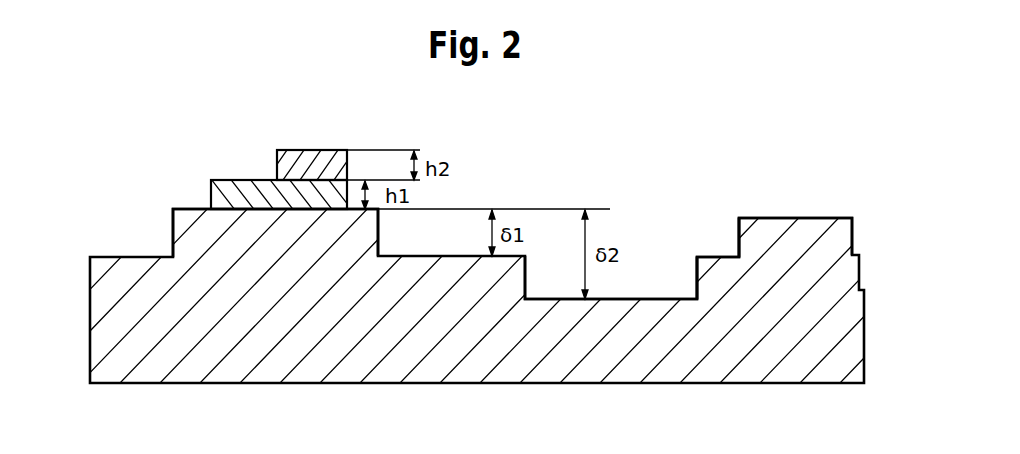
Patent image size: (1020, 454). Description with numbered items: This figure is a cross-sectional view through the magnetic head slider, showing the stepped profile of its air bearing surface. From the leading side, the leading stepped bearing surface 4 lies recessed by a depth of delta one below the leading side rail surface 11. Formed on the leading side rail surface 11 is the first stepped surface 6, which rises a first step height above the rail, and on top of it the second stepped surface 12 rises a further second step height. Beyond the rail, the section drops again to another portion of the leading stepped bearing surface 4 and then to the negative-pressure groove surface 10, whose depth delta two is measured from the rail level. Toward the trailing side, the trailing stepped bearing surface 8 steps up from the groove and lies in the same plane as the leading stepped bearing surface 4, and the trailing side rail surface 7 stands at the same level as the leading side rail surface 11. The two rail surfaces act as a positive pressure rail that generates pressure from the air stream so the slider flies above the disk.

The leading stepped bearing surface 4 is at (113, 256).
The first stepped surface 6 is at (240, 180).
The trailing side rail surface 7 is at (798, 218).
The trailing stepped bearing surface 8 is at (719, 256).
The negative-pressure groove surface 10 is at (658, 298).
The leading side rail surface 11 is at (190, 208).
The second stepped surface 12 is at (318, 157).